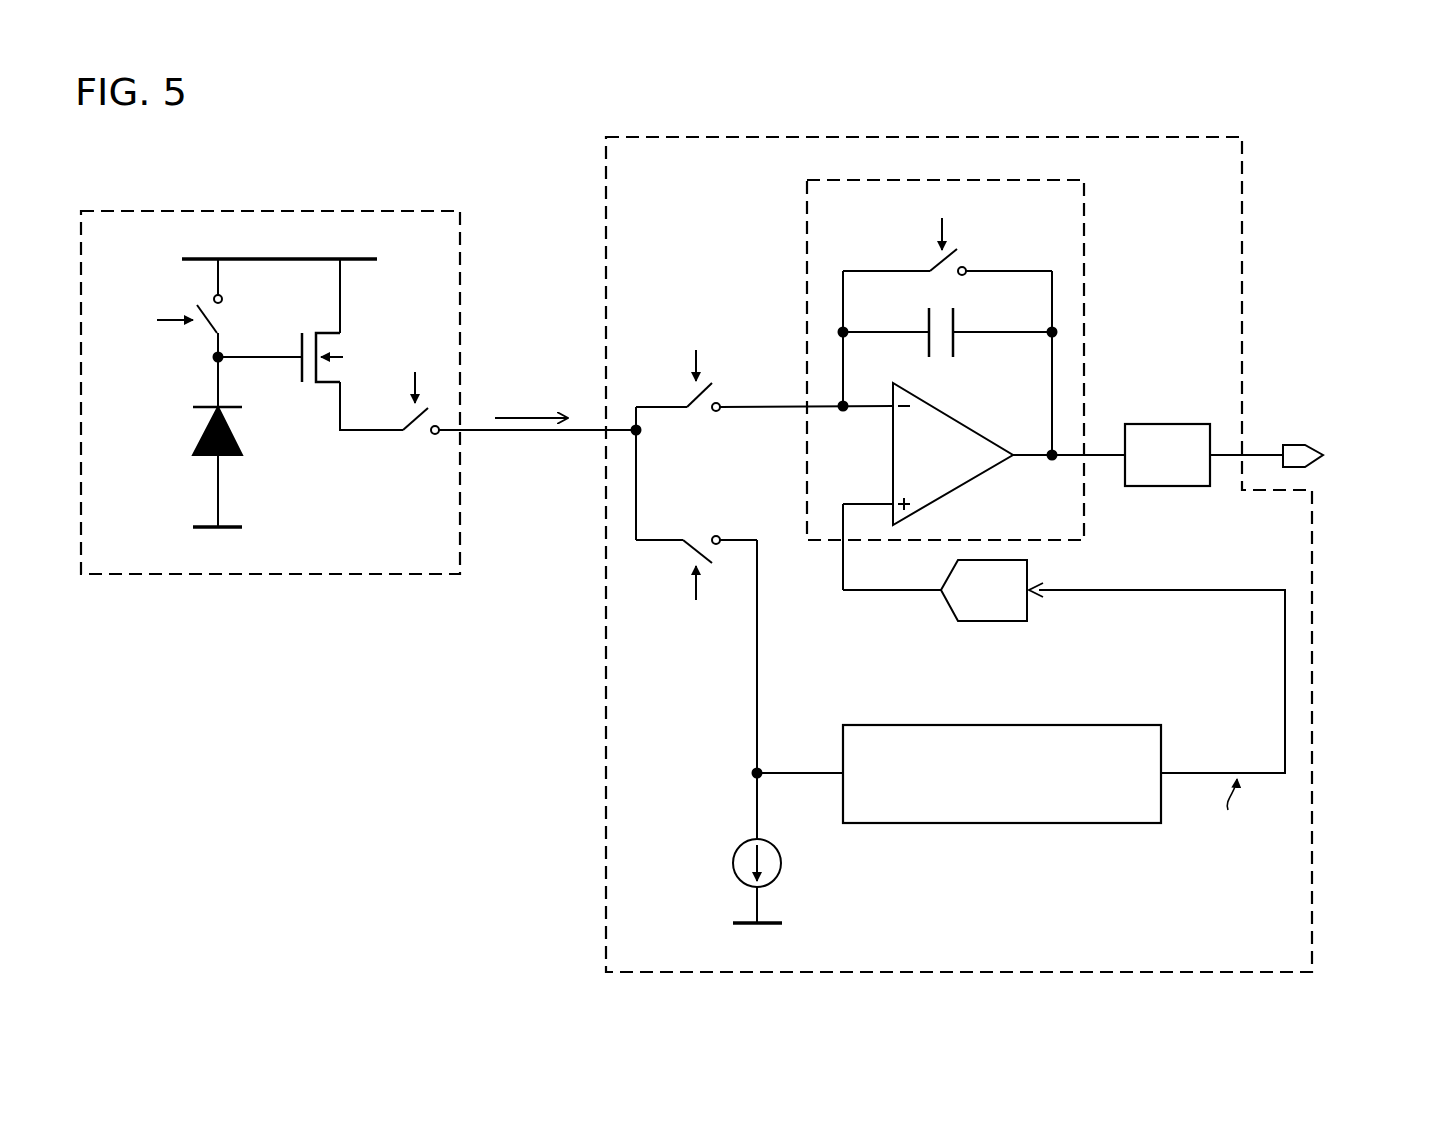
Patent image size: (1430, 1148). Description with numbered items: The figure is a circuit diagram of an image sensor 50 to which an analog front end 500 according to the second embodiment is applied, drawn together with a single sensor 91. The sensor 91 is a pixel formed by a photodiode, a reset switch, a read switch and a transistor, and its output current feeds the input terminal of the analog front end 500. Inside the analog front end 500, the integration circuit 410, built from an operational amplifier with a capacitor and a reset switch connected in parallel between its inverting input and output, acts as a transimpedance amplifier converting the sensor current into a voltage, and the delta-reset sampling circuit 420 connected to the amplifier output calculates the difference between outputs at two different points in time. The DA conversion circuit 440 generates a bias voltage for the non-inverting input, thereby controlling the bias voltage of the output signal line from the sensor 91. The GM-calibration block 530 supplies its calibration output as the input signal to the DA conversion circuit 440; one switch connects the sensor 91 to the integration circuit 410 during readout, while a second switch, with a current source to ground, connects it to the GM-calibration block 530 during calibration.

The image sensor 50 is at (520, 115).
The sensor 91 is at (105, 575).
The analog front end 500 is at (626, 138).
The integration circuit 410 is at (822, 181).
The delta-reset sampling circuit 420 is at (1147, 487).
The DA conversion circuit 440 is at (972, 622).
The GM-calibration block 530 is at (1164, 756).